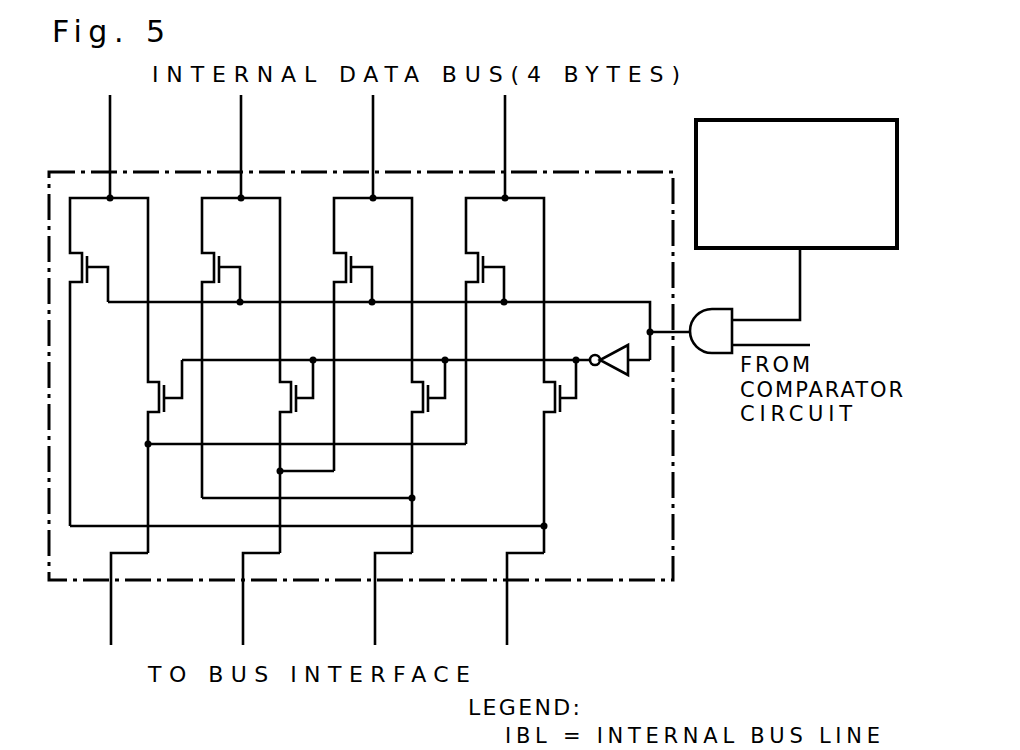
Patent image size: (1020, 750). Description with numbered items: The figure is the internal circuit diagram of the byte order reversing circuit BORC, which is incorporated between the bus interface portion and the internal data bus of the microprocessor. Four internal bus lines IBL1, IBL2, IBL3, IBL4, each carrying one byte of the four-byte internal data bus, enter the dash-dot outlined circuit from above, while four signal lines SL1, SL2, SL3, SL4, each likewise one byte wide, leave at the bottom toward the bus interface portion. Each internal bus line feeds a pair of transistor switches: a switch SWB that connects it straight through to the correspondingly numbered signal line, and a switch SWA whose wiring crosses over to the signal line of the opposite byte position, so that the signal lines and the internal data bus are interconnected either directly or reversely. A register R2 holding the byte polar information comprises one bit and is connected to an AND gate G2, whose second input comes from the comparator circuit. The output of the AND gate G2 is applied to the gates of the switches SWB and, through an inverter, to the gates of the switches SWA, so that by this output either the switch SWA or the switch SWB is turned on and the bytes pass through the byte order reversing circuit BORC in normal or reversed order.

The register R2 is at (696, 132).
The AND gate G2 is at (720, 355).
The byte order reversing circuit BORC is at (673, 533).
The switch SWB is at (362, 361).
The switch SWA is at (330, 427).
The internal bus line 1 IBL1 is at (96, 146).
The internal bus line 2 IBL2 is at (227, 146).
The internal bus line 3 IBL3 is at (359, 146).
The internal bus line 4 IBL4 is at (491, 146).
The signal line SL1 is at (117, 599).
The signal line SL2 is at (249, 599).
The signal line SL3 is at (381, 599).
The signal line SL4 is at (513, 599).